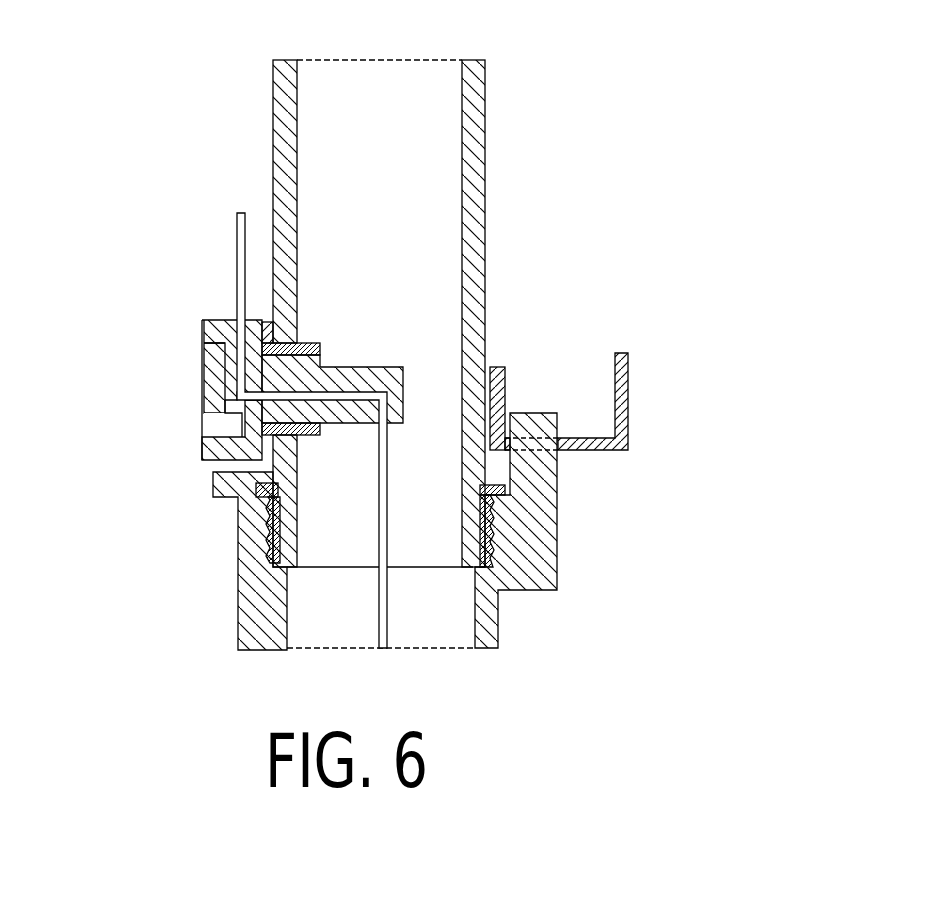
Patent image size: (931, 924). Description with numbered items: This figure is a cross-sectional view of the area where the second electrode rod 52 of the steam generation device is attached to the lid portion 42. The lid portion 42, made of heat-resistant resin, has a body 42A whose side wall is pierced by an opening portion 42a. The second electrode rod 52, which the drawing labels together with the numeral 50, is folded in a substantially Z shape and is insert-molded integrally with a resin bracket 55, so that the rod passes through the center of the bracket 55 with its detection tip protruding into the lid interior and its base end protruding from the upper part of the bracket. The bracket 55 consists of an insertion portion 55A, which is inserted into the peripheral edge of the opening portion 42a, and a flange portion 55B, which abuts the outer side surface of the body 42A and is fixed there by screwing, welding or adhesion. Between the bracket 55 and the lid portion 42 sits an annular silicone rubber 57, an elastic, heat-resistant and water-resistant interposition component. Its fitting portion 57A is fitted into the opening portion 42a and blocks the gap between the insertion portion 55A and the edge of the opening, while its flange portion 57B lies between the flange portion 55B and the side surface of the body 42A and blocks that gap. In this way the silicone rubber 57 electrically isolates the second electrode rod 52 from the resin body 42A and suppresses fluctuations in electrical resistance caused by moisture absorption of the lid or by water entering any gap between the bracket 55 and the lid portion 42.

The lid portion 42 is at (431, 334).
The body 42A is at (480, 133).
The opening portion 42a is at (318, 415).
The lead wire 50 is at (254, 430).
The second electrode rod 52 is at (235, 252).
The bracket 55 is at (232, 390).
The insertion portion 55A is at (262, 417).
The flange portion 55B is at (233, 363).
The silicone rubber 57 is at (342, 307).
The fitting portion 57A is at (307, 352).
The flange portion 57B is at (270, 333).